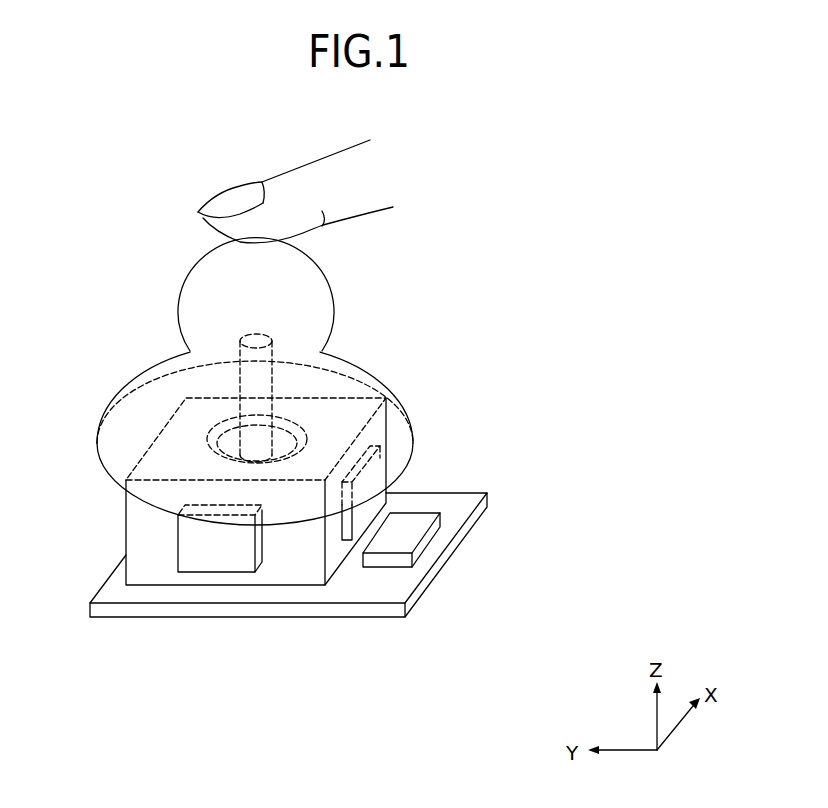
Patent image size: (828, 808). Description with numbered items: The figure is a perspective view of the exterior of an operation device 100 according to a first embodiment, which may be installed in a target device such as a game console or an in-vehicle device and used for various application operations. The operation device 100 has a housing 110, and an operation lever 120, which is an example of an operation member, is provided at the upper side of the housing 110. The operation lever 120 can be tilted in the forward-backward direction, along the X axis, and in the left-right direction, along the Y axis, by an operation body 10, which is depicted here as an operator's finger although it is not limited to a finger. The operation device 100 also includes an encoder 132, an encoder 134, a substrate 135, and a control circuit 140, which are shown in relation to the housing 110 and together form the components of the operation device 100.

The operation body 10 is at (238, 188).
The operation device 100 is at (497, 245).
The housing 110 is at (125, 534).
The operation lever 120 is at (368, 366).
The encoder 132 is at (372, 478).
The encoder 134 is at (222, 560).
The substrate 135 is at (367, 610).
The control circuit 140 is at (428, 538).